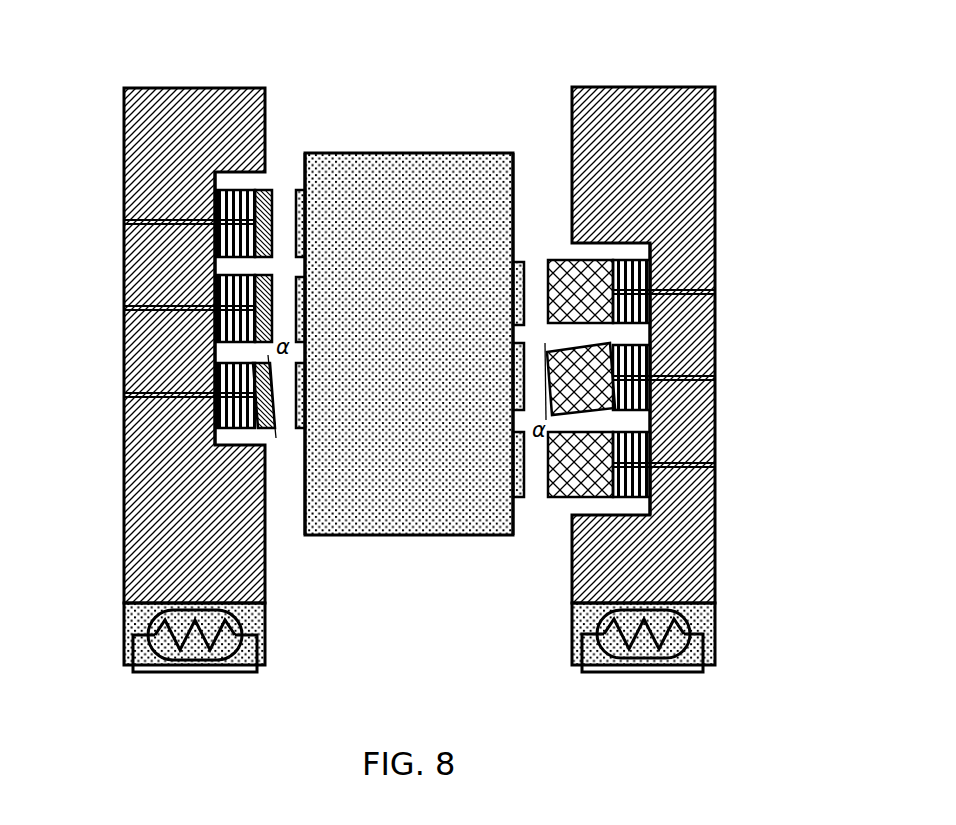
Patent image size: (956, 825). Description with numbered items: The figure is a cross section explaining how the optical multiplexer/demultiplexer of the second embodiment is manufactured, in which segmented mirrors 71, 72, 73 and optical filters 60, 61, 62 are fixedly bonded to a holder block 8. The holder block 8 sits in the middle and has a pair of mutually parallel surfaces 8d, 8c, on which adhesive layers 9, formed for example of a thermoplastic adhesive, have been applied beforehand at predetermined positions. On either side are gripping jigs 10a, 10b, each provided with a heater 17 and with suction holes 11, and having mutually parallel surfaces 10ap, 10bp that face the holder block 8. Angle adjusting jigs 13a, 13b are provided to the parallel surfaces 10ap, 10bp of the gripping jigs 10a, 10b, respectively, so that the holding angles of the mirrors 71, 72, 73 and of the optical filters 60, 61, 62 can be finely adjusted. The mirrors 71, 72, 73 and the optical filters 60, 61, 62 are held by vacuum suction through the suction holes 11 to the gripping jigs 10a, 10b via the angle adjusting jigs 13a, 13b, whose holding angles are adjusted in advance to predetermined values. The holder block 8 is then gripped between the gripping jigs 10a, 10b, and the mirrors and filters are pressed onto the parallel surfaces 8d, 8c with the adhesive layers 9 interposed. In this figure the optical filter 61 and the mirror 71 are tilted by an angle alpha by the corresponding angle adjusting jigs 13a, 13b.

The holder block 8 is at (388, 153).
The parallel surface of holder block 8c is at (522, 160).
The parallel surface of holder block 8d is at (300, 163).
The adhesive layer 9 is at (296, 208).
The gripping jig 10a is at (193, 87).
The parallel surface of gripping jig 10ap is at (215, 433).
The gripping jig 10b is at (650, 87).
The parallel surface of gripping jig 10bp is at (655, 510).
The suction hole 11 is at (124, 222).
The angle adjusting jig 13a is at (215, 190).
The angle adjusting jig 13b is at (650, 259).
The heater 17 is at (265, 655).
The mirror 71 is at (270, 435).
The mirror 72 is at (279, 250).
The mirror 73 is at (265, 190).
The optical filter 60 is at (558, 500).
The optical filter 61 is at (585, 346).
The optical filter 62 is at (560, 258).